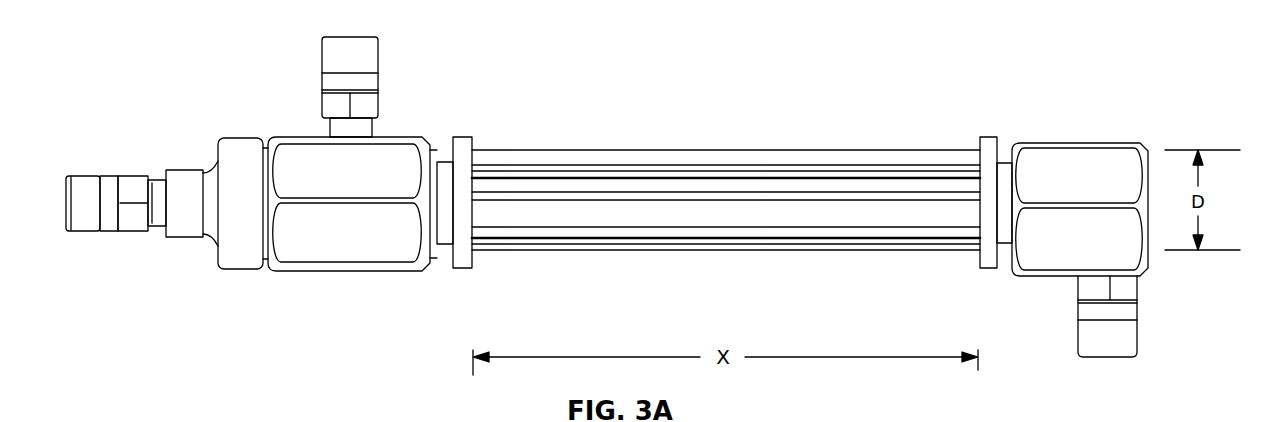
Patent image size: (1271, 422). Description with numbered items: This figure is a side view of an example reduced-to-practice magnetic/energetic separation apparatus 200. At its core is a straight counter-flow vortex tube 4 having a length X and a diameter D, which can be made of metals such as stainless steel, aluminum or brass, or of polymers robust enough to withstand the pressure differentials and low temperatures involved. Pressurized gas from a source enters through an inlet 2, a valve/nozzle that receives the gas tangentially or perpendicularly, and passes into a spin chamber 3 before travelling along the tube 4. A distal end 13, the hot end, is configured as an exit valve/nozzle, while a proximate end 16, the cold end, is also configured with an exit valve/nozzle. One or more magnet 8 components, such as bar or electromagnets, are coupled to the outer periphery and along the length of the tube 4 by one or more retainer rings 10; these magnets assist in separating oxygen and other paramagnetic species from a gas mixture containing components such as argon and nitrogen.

The magnetic/energetic separation apparatus 200 is at (607, 224).
The inlet 2 is at (378, 65).
The spin chamber 3 is at (340, 181).
The counter-flow vortex tube 4 is at (755, 213).
The magnet components 8 is at (550, 157).
The retainer rings 10 is at (463, 268).
The distal end 13 is at (1110, 340).
The proximate end 16 is at (86, 188).